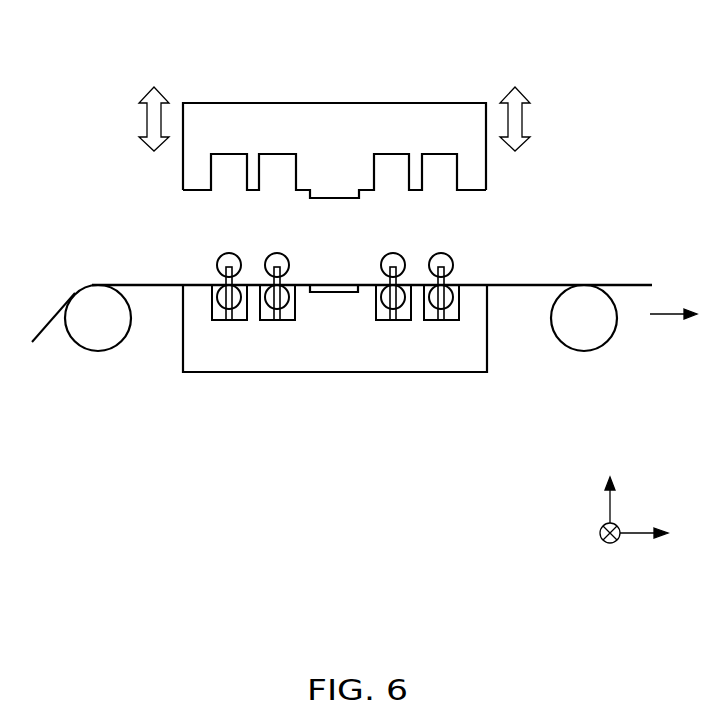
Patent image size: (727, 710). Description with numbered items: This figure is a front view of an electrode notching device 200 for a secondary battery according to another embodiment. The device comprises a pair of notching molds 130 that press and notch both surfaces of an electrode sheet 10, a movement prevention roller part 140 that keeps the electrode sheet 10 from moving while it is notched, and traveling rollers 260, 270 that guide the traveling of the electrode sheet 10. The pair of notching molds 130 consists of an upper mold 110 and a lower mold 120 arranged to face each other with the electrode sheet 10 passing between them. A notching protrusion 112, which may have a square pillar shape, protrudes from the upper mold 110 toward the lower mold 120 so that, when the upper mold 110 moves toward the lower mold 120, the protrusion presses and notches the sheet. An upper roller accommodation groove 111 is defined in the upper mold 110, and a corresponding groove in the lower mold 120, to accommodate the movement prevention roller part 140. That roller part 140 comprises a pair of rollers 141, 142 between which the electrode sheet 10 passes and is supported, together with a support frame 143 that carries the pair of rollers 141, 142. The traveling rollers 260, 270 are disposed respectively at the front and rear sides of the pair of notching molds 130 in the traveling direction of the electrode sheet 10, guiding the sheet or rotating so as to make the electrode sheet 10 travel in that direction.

The electrode notching device 200 is at (360, 288).
The electrode sheet 10 is at (517, 283).
The upper mold 110 is at (398, 129).
The upper roller accommodation groove 111 is at (279, 176).
The lower mold 120 is at (318, 293).
The notching protrusion 112 is at (263, 311).
The pair of notching molds 130 is at (351, 242).
The movement prevention roller part 140 is at (241, 242).
The roller 141 is at (220, 260).
The roller 142 is at (220, 294).
The support frame 143 is at (223, 313).
The traveling roller 260 is at (95, 357).
The traveling roller 270 is at (583, 342).